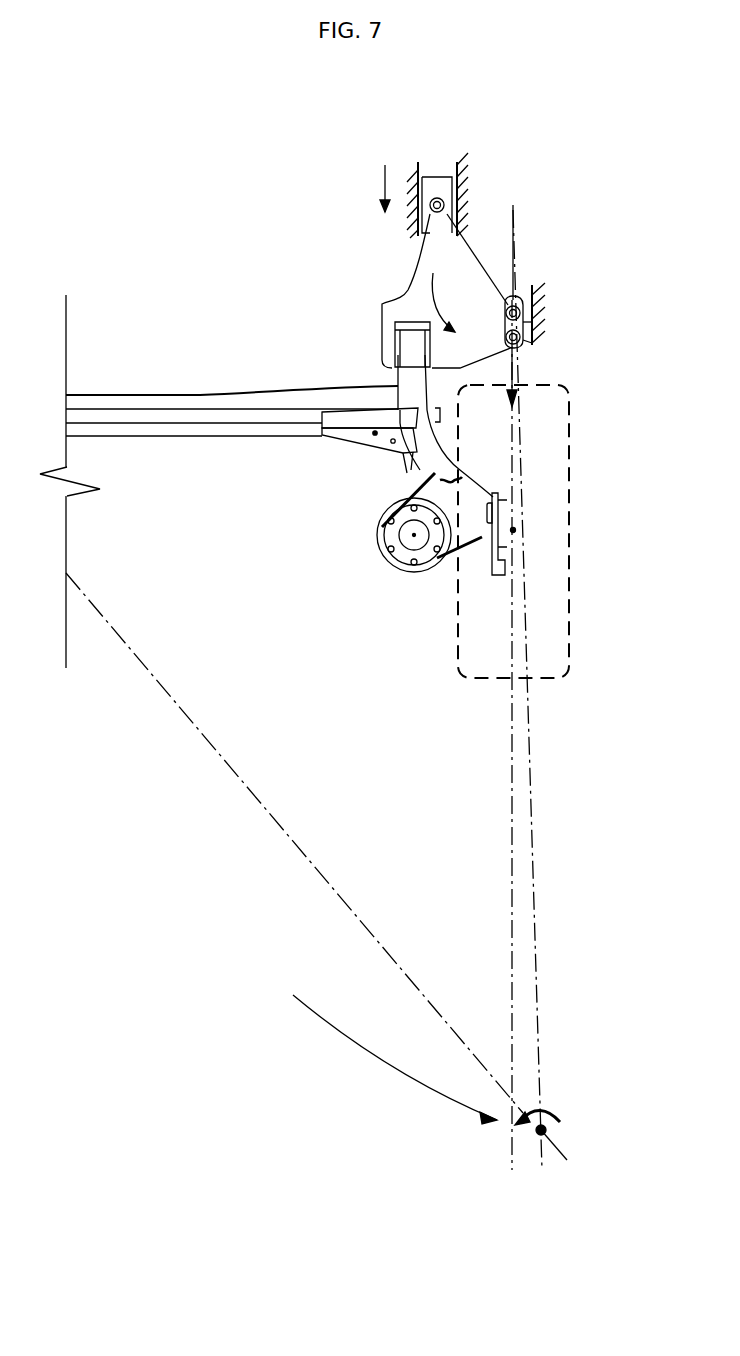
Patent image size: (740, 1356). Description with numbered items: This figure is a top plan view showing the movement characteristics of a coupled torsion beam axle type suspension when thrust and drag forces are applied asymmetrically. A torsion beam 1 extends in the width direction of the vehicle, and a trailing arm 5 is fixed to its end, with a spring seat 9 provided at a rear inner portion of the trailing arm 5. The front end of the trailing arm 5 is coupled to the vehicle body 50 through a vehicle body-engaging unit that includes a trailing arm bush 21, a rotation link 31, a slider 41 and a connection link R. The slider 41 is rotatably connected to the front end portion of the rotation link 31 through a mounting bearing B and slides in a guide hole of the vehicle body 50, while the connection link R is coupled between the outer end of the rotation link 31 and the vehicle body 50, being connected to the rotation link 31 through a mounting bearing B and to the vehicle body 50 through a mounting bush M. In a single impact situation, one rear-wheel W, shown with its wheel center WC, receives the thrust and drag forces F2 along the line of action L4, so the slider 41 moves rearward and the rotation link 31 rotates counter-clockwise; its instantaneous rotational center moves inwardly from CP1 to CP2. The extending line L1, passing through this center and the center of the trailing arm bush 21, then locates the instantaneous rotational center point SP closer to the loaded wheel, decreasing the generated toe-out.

The torsion beam 1 is at (182, 436).
The trailing arm 5 is at (402, 468).
The spring seat 9 is at (397, 545).
The trailing arm bush 21 is at (406, 330).
The rotation link 31 is at (400, 283).
The slider 41 is at (437, 186).
The vehicle body 50 is at (466, 180).
The instantaneous rotational center point of the rotation link (initial position) CP1 is at (516, 222).
The instantaneous rotational center point of the rotation link (moved position) CP2 is at (516, 252).
The mounting bush M is at (523, 313).
The connection link R is at (535, 324).
The mounting bearing B is at (536, 341).
The thrust and drag forces F2 is at (513, 377).
The wheel center WC is at (515, 532).
The rear-wheel W is at (490, 679).
The line of action L4 is at (512, 925).
The extending line L1 is at (537, 985).
The instantaneous rotational center point SP is at (547, 1130).